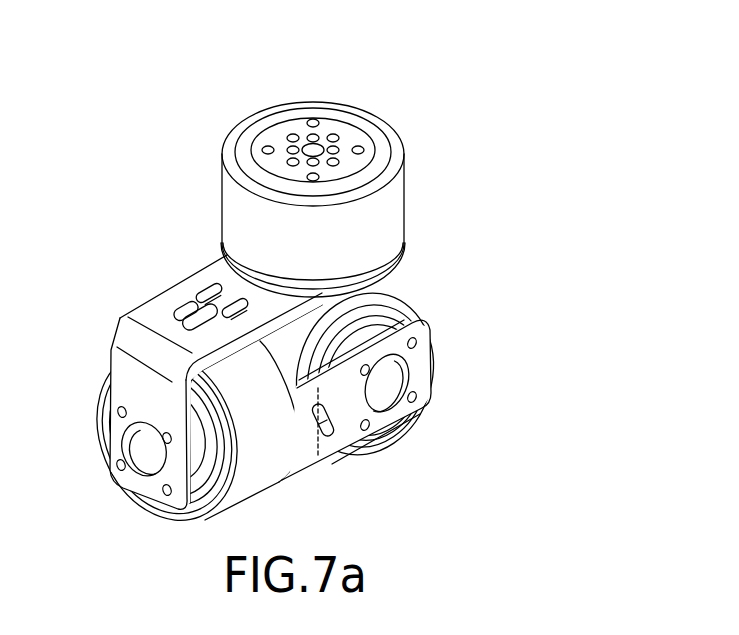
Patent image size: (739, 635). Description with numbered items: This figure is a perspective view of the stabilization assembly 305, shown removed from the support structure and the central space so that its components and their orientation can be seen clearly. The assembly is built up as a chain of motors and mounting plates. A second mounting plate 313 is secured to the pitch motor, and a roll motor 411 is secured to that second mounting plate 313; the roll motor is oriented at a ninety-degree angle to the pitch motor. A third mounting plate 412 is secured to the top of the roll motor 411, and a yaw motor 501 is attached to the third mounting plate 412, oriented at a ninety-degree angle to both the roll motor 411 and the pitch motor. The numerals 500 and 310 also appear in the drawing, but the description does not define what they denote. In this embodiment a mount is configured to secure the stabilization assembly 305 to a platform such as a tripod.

The stabilization assembly 305 is at (359, 170).
The yaw motor 501 is at (394, 219).
The bracket housing 500 is at (199, 243).
The third mounting plate 412 is at (121, 331).
The roll motor 411 is at (259, 481).
The wheel assembly 310 is at (476, 302).
The second mounting plate 313 is at (428, 388).